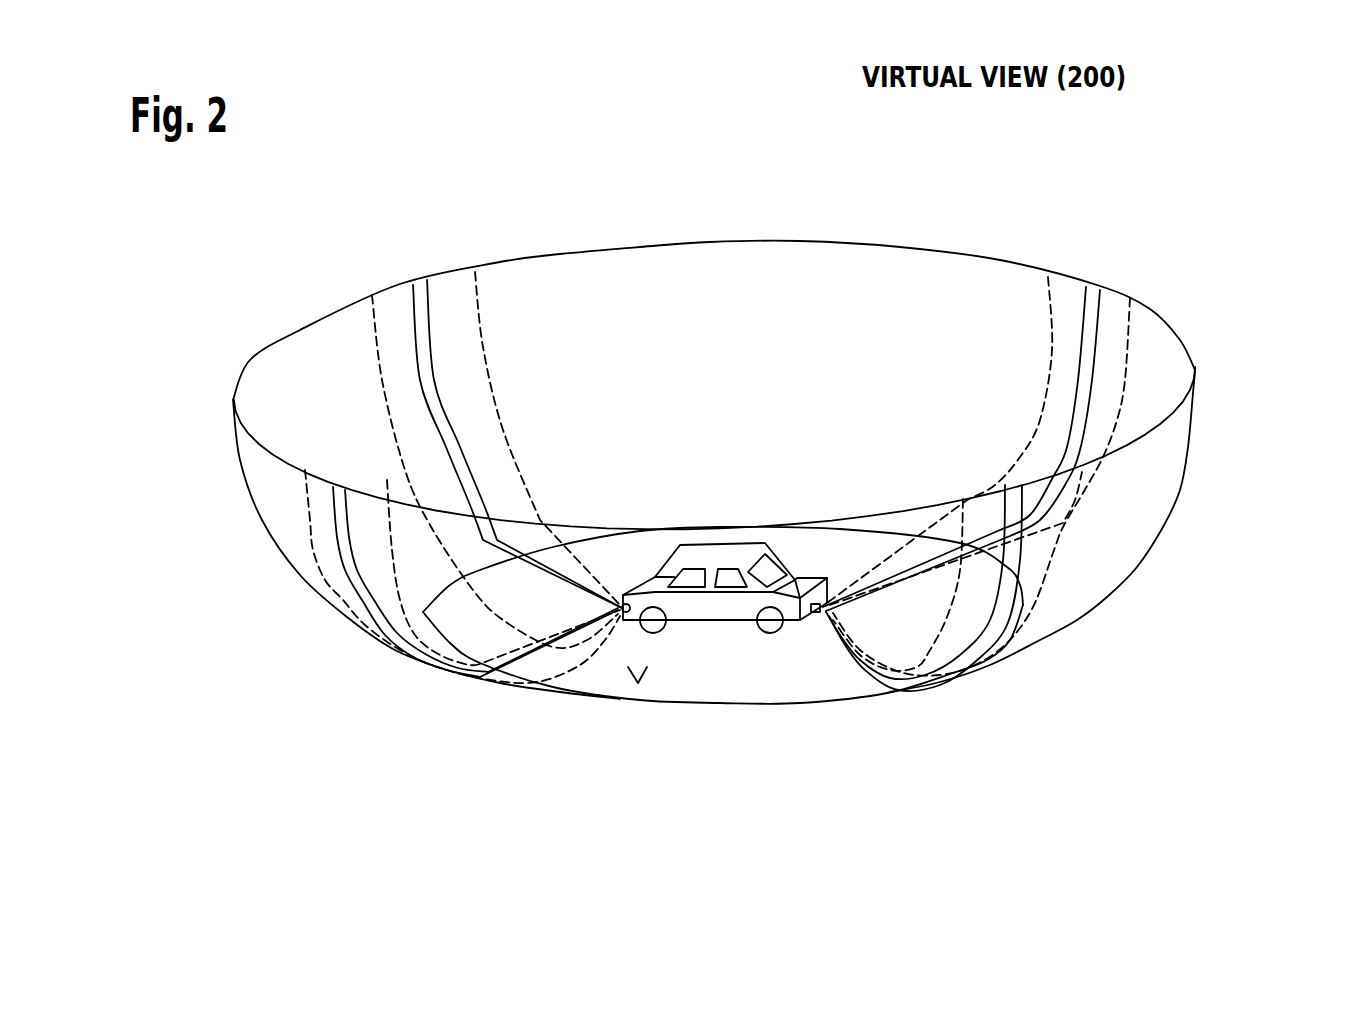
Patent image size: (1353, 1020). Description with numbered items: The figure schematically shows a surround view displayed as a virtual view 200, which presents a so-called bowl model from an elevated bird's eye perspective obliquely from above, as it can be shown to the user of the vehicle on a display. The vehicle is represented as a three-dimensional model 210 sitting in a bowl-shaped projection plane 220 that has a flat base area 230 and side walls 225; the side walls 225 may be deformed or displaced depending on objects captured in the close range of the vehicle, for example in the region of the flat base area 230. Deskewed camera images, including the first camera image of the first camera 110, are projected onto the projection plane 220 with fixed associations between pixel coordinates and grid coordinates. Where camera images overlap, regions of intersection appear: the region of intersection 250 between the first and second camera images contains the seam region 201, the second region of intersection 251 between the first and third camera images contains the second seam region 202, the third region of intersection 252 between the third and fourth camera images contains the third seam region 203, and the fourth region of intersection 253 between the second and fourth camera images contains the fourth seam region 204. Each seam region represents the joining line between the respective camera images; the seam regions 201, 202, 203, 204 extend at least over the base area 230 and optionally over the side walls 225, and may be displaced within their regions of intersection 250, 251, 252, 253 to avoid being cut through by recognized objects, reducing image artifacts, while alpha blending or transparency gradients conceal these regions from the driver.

The first camera 110 is at (628, 618).
The virtual view 200 is at (950, 175).
The seam region 201 is at (363, 590).
The second seam region 202 is at (423, 330).
The third seam region 203 is at (1093, 305).
The fourth seam region 204 is at (993, 612).
The three-dimensional model 210 is at (710, 607).
The bowl-shaped projection plane 220 is at (710, 241).
The side walls 225 is at (1173, 495).
The flat base area 230 is at (628, 667).
The region of intersection 250 is at (330, 545).
The second region of intersection 251 is at (393, 315).
The third region of intersection 252 is at (1068, 296).
The fourth region of intersection 253 is at (1033, 567).